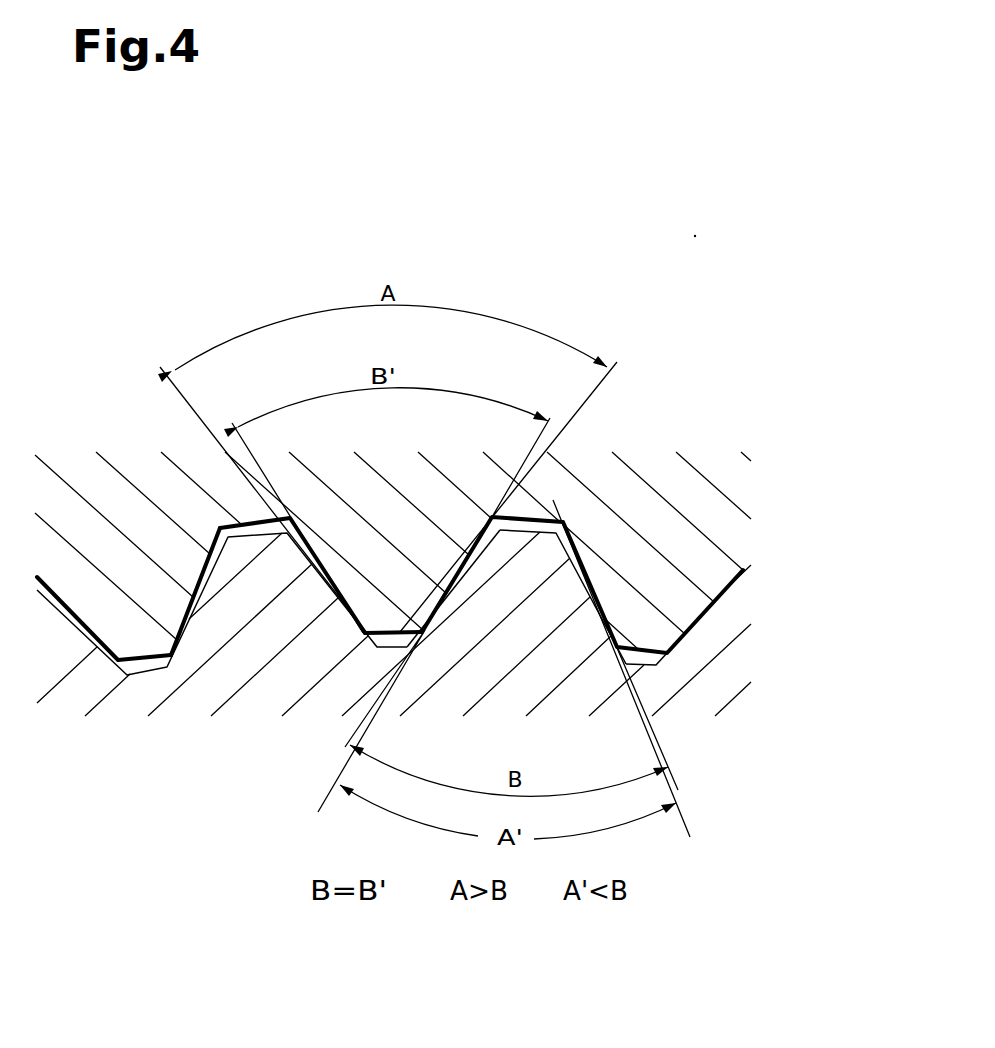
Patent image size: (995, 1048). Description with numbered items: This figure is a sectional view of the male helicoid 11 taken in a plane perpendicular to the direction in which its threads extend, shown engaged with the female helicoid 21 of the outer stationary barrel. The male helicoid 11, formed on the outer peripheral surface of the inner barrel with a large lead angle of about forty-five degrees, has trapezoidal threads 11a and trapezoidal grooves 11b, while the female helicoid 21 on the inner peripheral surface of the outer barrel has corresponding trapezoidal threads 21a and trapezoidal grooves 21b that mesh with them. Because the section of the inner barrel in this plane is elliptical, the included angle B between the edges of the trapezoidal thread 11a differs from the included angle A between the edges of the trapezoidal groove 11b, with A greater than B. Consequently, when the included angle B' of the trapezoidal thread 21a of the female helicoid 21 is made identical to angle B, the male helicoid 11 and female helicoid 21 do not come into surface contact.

The female helicoid 21 is at (642, 456).
The trapezoidal thread 21a is at (416, 603).
The trapezoidal groove 21b is at (217, 552).
The male helicoid 11 is at (302, 722).
The trapezoidal thread 11a is at (543, 550).
The trapezoidal groove 11b is at (474, 563).